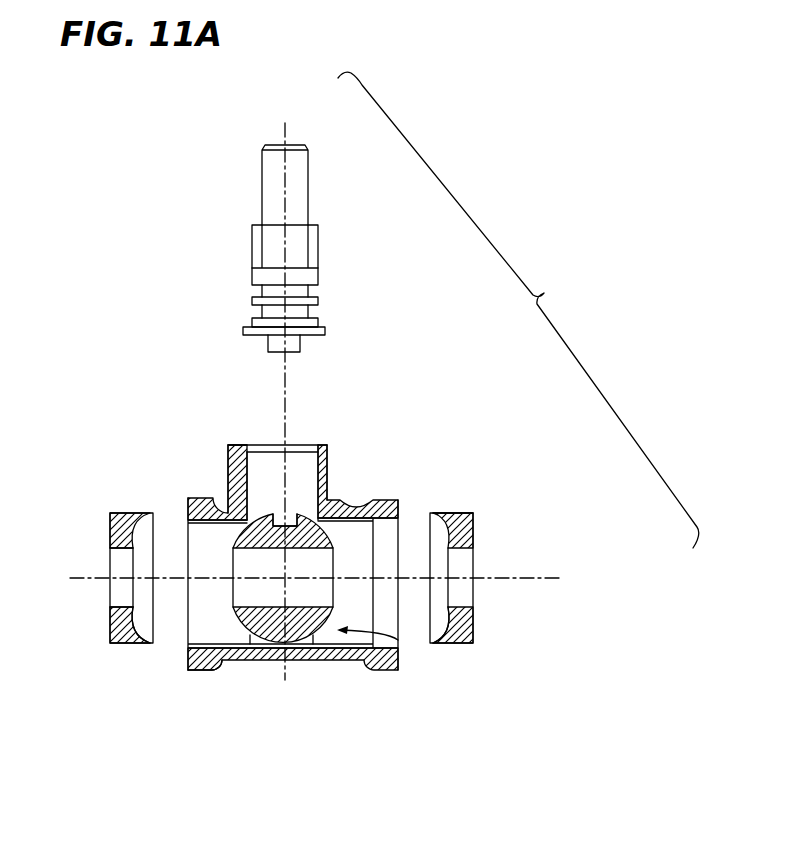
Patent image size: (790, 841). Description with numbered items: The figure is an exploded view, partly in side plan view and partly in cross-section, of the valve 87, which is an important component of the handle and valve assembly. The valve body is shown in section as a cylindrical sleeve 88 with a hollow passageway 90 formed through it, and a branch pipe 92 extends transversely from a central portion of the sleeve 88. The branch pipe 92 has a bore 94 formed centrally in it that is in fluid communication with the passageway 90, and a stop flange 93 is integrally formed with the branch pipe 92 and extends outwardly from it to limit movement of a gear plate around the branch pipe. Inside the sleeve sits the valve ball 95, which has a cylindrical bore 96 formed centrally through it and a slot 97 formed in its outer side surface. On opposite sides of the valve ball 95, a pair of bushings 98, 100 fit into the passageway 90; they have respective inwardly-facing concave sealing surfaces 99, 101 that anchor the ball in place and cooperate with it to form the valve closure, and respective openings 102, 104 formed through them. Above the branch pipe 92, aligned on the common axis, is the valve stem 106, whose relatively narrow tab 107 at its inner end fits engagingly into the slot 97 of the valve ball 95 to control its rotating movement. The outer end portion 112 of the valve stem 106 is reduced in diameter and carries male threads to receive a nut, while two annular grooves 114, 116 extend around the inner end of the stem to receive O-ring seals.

The valve 87 is at (518, 310).
The cylindrical sleeve 88 is at (275, 558).
The hollow passageway 90 is at (210, 645).
The branch pipe 92 is at (328, 478).
The stop flange 93 is at (228, 465).
The bore 94 is at (238, 445).
The valve ball 95 is at (398, 640).
The cylindrical bore 96 is at (232, 560).
The slot 97 is at (279, 522).
The bushing 98 is at (110, 532).
The concave sealing surface 99 is at (110, 625).
The bushing 100 is at (473, 534).
The concave sealing surface 101 is at (458, 513).
The opening 102 is at (121, 607).
The opening 104 is at (473, 598).
The valve stem 106 is at (283, 229).
The tab 107 is at (296, 362).
The outer end portion 112 is at (262, 160).
The annular groove 114 is at (316, 317).
The annular groove 116 is at (314, 288).